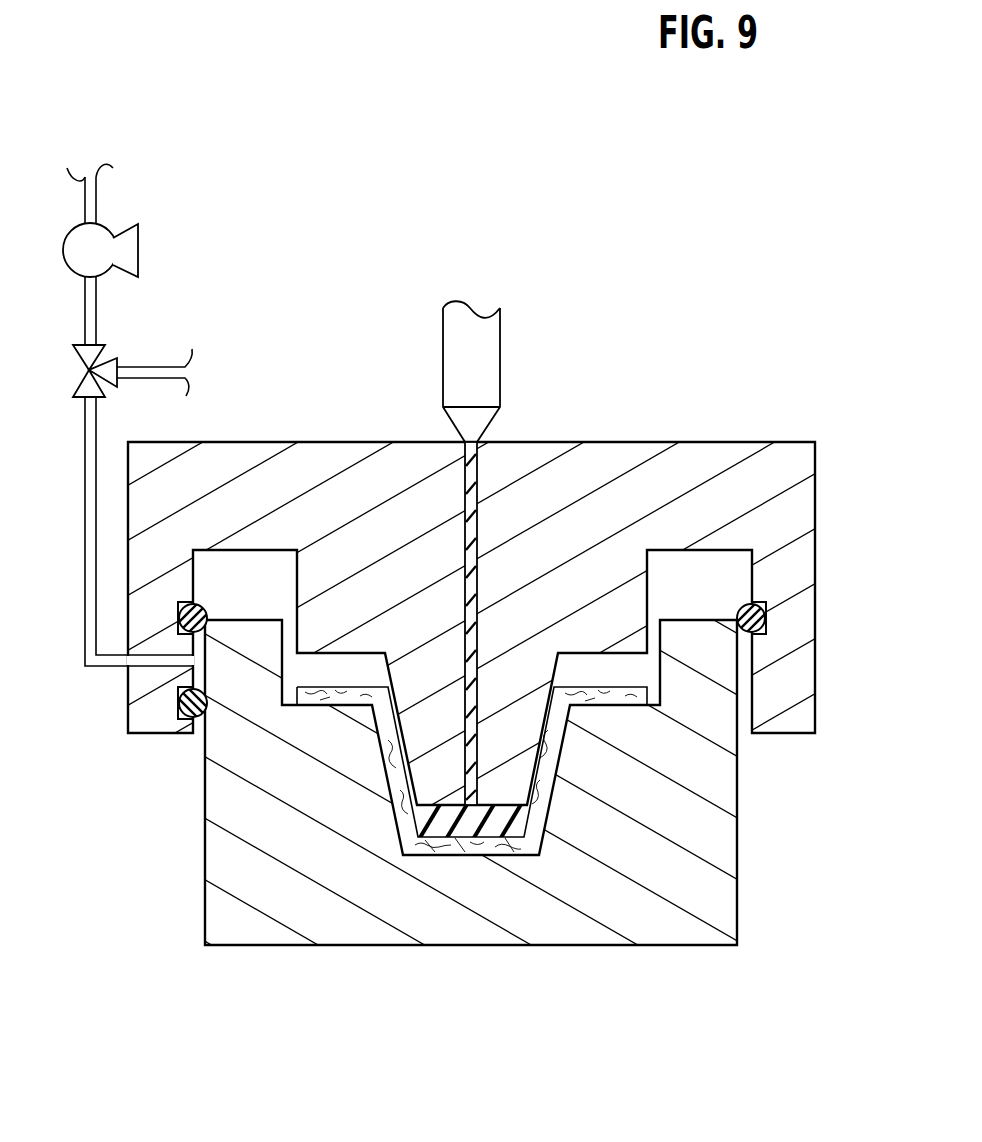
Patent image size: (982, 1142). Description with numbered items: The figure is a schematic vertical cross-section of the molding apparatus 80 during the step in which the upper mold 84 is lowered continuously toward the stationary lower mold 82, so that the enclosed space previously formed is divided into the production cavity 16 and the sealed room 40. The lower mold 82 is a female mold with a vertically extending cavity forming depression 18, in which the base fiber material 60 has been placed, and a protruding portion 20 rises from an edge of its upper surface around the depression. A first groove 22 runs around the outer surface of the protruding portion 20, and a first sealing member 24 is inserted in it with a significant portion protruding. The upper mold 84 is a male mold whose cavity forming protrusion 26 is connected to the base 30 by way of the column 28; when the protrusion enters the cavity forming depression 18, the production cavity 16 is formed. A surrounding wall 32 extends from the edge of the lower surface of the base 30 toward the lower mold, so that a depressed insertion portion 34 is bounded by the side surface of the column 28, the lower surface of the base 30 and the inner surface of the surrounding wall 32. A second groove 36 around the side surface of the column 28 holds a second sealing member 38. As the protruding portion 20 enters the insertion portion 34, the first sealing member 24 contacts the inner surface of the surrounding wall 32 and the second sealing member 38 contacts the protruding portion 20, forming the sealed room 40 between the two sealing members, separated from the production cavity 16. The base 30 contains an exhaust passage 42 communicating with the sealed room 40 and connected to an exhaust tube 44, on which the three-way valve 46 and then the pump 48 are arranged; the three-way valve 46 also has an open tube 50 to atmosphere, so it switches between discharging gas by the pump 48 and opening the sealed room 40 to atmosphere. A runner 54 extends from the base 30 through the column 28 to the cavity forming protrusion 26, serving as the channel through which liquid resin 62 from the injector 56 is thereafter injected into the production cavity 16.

The production cavity 16 is at (650, 704).
The cavity forming depression 18 is at (512, 833).
The protruding portion 20 is at (690, 638).
The first groove 22 is at (207, 713).
The first sealing member 24 is at (203, 690).
The cavity forming protrusion 26 is at (520, 790).
The column 28 is at (313, 575).
The base 30 is at (605, 453).
The surrounding wall 32 is at (808, 670).
The insertion portion 34 is at (668, 552).
The second groove 36 is at (743, 627).
The second sealing member 38 is at (747, 608).
The sealed room 40 is at (200, 650).
The exhaust passage 42 is at (150, 662).
The exhaust tube 44 is at (90, 304).
The three-way valve 46 is at (105, 363).
The pump 48 is at (130, 250).
The open tube 50 is at (155, 373).
The runner 54 is at (470, 478).
The injector 56 is at (453, 352).
The base fiber material 60 is at (435, 850).
The liquid resin 62 is at (485, 855).
The molding apparatus 80 is at (731, 190).
The lower mold 82 is at (522, 730).
The upper mold 84 is at (478, 588).